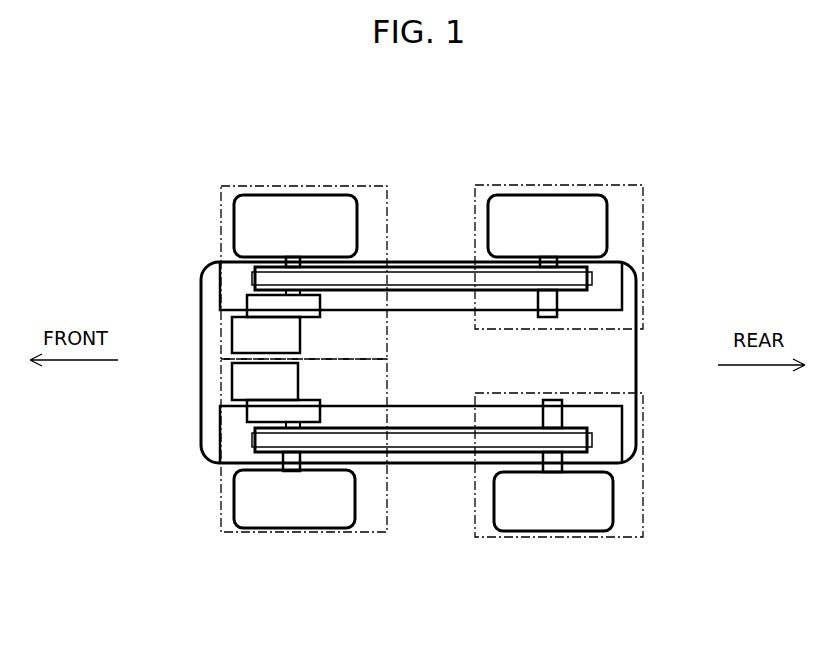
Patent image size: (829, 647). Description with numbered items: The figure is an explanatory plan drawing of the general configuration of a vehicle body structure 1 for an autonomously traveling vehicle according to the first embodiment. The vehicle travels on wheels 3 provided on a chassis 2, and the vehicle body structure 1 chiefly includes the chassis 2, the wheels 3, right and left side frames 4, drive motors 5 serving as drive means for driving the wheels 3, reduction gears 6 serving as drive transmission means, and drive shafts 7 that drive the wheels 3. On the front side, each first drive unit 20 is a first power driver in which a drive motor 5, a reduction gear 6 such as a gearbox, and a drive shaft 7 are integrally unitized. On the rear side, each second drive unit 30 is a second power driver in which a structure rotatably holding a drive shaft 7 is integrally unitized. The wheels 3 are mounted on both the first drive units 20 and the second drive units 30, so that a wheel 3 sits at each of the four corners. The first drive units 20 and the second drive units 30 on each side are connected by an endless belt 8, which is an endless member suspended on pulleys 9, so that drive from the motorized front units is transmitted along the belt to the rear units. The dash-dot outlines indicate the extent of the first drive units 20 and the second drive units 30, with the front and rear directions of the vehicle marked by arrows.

The vehicle body structure 1 is at (694, 230).
The chassis 2 is at (642, 412).
The wheels 3 is at (288, 203).
The side frames 4 is at (613, 283).
The drive motor 5 is at (243, 337).
The reduction gear 6 is at (253, 303).
The drive shaft 7 is at (283, 262).
The endless belt 8 is at (425, 272).
The pulleys 9 is at (327, 292).
The first drive unit 20 is at (336, 178).
The second drive unit 30 is at (586, 180).